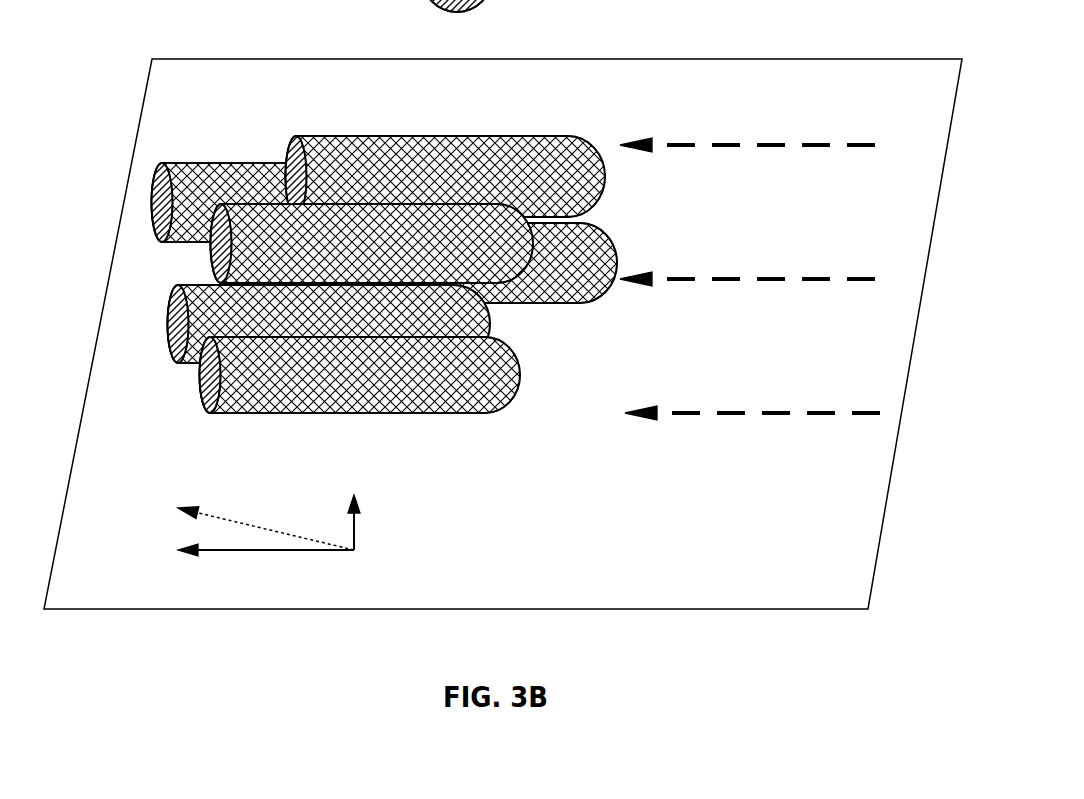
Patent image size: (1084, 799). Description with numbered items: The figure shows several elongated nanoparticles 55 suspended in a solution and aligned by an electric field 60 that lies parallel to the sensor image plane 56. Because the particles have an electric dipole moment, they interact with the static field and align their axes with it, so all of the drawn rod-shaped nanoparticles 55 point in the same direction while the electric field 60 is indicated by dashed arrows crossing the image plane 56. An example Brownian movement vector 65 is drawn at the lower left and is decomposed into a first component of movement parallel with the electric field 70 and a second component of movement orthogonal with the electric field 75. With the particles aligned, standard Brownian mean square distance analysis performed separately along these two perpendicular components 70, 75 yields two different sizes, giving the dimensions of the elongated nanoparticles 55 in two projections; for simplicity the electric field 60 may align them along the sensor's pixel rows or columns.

The elongated nanoparticles in presence of electric field 55 is at (495, 427).
The sensor image plane 56 is at (767, 59).
The electric field 60 is at (768, 413).
The example Brownian movement vector 65 is at (217, 517).
The first component of movement parallel with electric field 70 is at (252, 551).
The second component of movement orthogonal with electric field 75 is at (354, 525).